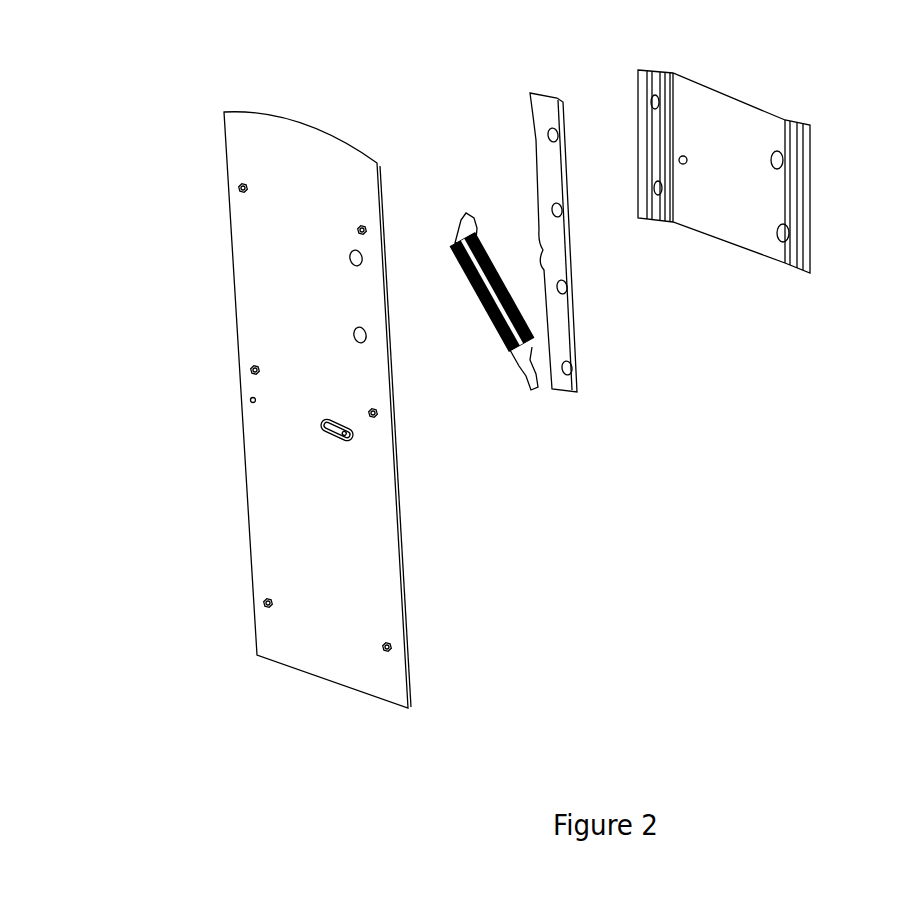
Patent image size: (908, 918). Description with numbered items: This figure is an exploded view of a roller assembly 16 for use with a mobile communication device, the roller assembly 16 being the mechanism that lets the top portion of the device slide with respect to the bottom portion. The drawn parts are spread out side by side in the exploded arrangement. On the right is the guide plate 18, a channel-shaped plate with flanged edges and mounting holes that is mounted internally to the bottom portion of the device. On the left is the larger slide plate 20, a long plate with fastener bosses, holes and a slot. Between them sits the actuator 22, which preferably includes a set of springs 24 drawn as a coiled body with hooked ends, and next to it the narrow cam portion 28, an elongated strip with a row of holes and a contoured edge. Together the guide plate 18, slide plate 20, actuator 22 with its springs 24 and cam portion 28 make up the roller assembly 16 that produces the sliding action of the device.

The roller assembly 16 is at (704, 611).
The guide plate 18 is at (756, 228).
The slide plate 20 is at (308, 398).
The actuator 22 is at (468, 229).
The set of springs 24 is at (508, 268).
The cam portion 28 is at (577, 336).